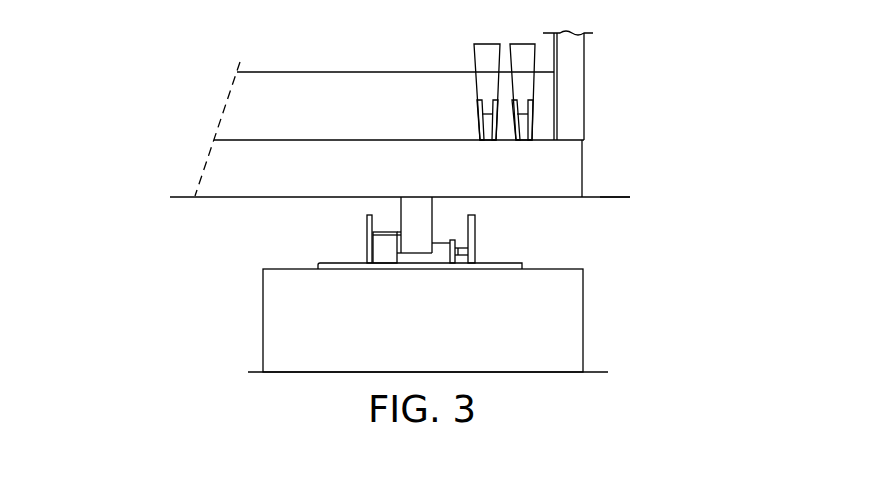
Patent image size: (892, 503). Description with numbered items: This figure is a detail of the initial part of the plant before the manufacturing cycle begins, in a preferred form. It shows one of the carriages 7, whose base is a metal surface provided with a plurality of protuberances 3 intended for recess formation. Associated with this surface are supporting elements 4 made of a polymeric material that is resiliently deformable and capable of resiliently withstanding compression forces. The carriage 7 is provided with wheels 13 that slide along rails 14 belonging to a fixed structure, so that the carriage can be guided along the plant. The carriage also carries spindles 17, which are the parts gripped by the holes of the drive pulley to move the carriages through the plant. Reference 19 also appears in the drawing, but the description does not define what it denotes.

The protuberances 3 is at (477, 118).
The supporting elements 4 is at (487, 38).
The carriages 7 is at (400, 180).
The wheels 13 is at (382, 244).
The rails 14 is at (381, 232).
The spindles 17 is at (470, 252).
The ground surface 19 is at (617, 196).